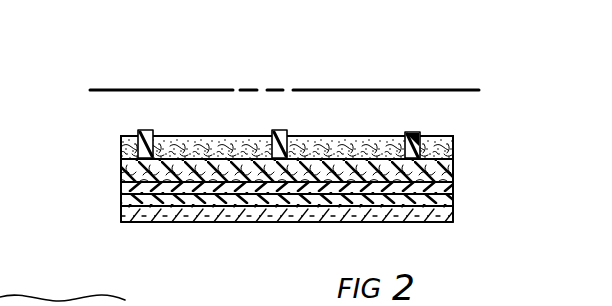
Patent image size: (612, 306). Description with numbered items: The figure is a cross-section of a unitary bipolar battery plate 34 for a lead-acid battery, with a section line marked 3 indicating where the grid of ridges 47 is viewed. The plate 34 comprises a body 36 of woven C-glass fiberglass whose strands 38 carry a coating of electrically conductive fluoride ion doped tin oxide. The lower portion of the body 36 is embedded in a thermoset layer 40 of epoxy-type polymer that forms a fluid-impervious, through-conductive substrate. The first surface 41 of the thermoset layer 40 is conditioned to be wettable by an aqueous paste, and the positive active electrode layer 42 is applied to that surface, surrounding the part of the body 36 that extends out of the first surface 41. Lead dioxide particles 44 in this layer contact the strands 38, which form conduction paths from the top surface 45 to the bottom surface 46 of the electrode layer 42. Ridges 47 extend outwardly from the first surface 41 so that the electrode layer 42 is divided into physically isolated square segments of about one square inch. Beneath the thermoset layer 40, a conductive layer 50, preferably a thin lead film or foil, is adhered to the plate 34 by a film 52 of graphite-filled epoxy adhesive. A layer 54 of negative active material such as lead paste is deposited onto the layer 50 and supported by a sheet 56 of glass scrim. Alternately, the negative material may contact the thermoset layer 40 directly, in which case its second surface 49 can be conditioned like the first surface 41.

The section line 3- 3 is at (479, 88).
The bipolar battery plate 34 is at (480, 208).
The body 36 is at (112, 136).
The strands 38 is at (228, 150).
The thermoset layer 40 is at (455, 172).
The first surface 41 is at (210, 136).
The positive active electrode layer 42 is at (454, 145).
The lead dioxide particles 44 is at (358, 136).
The top surface 45 is at (122, 135).
The bottom surface 46 is at (427, 150).
The ridges 47 is at (147, 130).
The second surface 49 is at (431, 214).
The layer 50 is at (123, 201).
The film of graphite-filled epoxy adhesive 52 is at (123, 188).
The layer of negative active material 54 is at (249, 218).
The sheet of glass scrim 56 is at (293, 223).